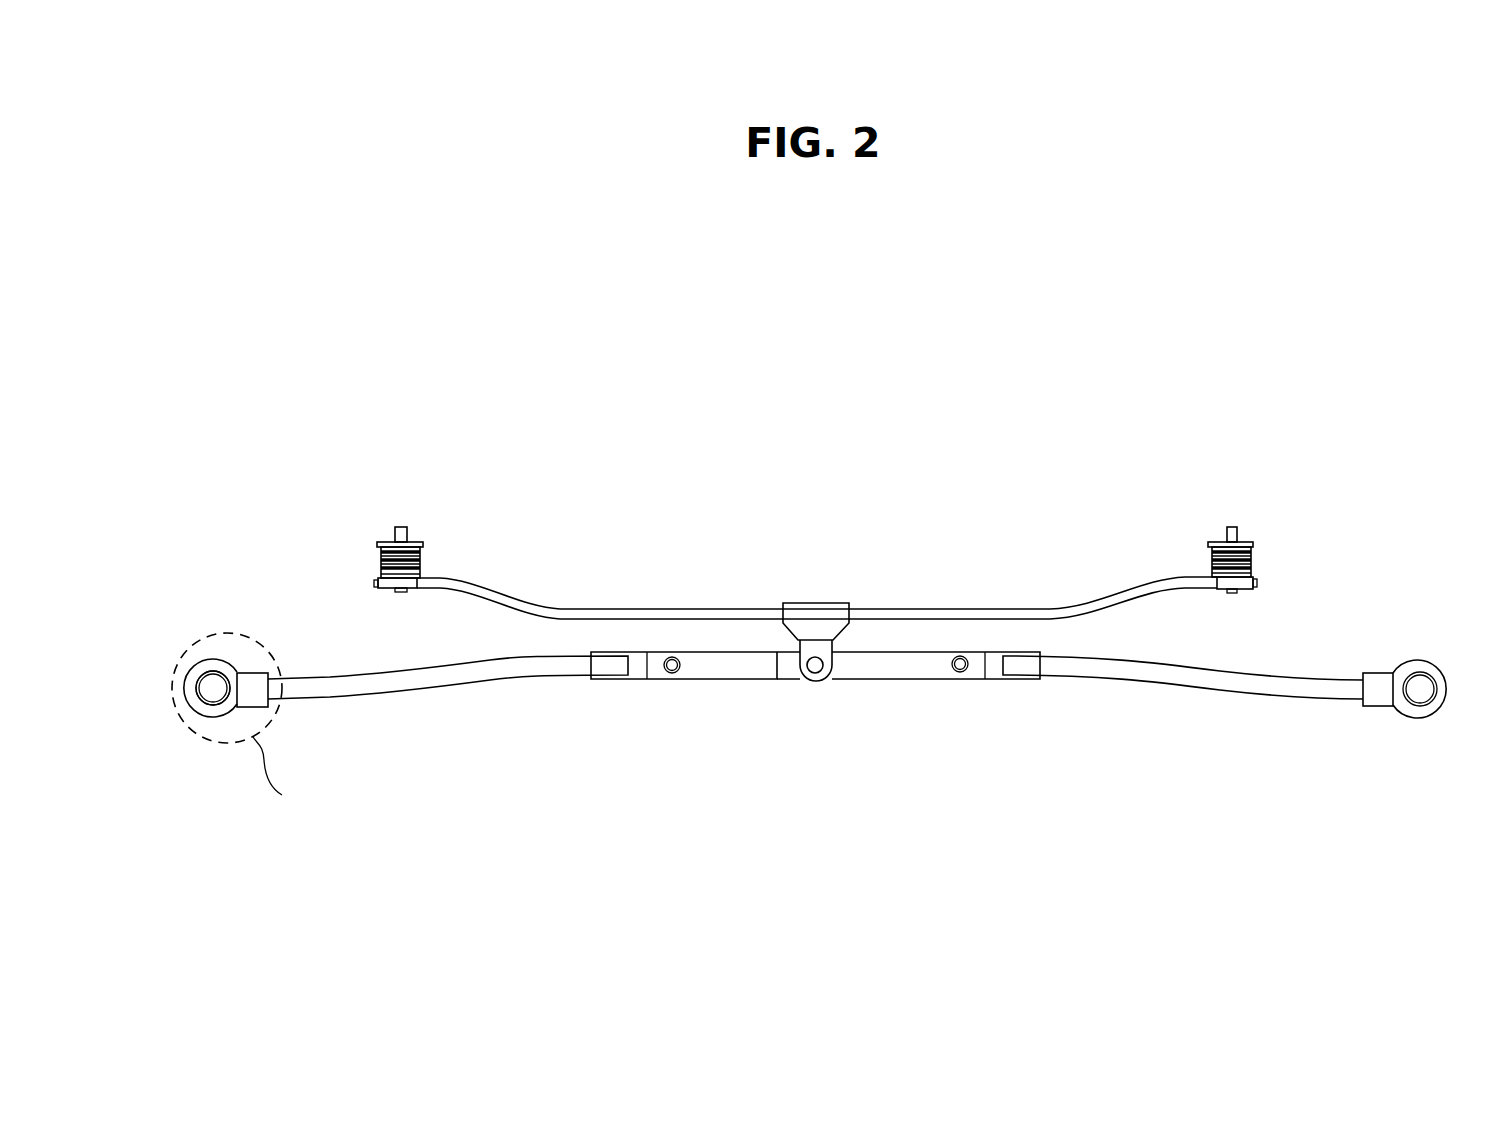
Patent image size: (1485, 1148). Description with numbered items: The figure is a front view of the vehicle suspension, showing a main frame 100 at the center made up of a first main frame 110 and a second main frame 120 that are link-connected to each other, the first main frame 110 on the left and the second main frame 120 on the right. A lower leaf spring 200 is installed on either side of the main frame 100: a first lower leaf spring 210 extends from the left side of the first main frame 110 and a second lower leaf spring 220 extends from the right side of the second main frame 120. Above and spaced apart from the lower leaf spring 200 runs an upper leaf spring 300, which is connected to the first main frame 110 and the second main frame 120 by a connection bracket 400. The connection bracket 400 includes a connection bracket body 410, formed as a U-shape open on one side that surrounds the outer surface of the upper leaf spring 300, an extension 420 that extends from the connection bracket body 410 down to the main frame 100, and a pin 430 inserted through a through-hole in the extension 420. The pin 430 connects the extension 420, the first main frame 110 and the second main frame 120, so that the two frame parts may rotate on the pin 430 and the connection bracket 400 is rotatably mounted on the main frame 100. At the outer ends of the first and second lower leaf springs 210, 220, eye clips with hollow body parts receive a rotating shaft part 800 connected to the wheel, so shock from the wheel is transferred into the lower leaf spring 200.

The main frame 100 is at (815, 748).
The first main frame 110 is at (738, 666).
The second main frame 120 is at (920, 668).
The lower leaf spring 200 is at (815, 765).
The first lower leaf spring 210 is at (445, 690).
The second lower leaf spring 220 is at (1156, 672).
The upper leaf spring 300 is at (659, 609).
The connection bracket 400 is at (887, 579).
The connection bracket body 410 is at (817, 620).
The extension 420 is at (832, 657).
The pin 430 is at (815, 665).
The rotating shaft part 800 is at (210, 682).